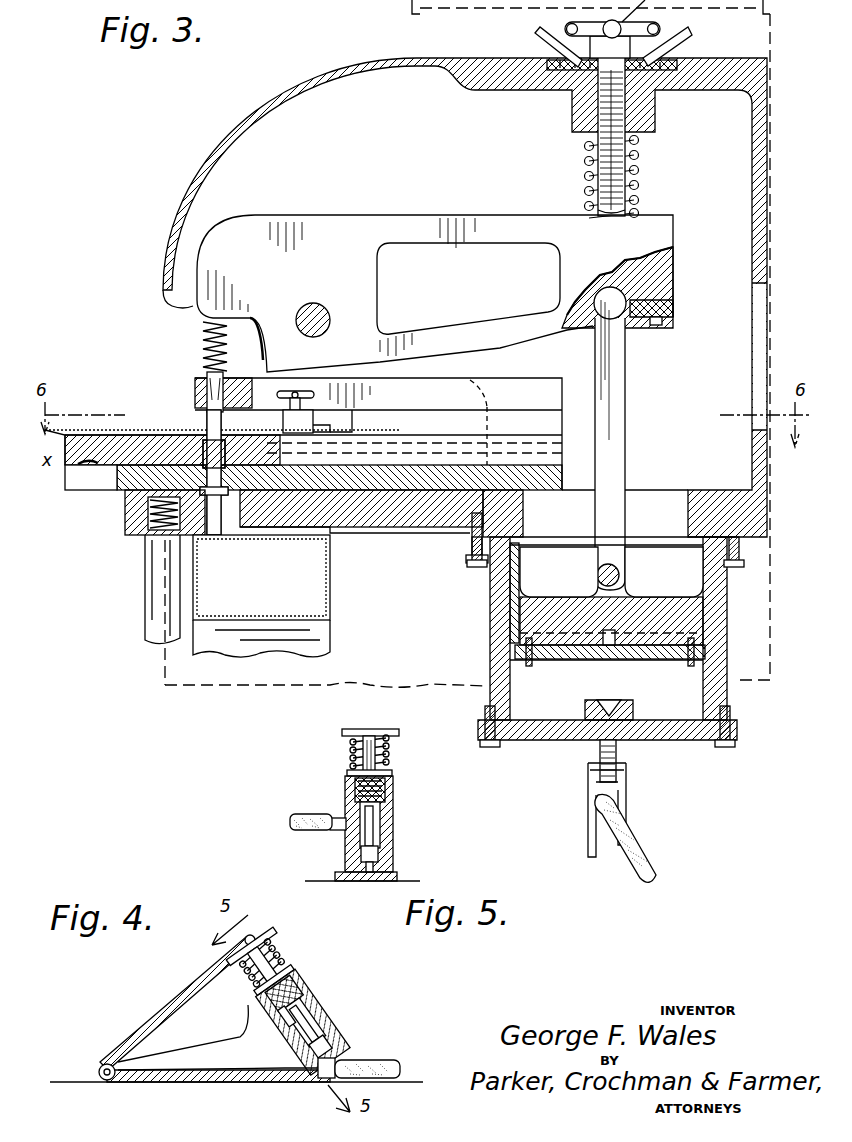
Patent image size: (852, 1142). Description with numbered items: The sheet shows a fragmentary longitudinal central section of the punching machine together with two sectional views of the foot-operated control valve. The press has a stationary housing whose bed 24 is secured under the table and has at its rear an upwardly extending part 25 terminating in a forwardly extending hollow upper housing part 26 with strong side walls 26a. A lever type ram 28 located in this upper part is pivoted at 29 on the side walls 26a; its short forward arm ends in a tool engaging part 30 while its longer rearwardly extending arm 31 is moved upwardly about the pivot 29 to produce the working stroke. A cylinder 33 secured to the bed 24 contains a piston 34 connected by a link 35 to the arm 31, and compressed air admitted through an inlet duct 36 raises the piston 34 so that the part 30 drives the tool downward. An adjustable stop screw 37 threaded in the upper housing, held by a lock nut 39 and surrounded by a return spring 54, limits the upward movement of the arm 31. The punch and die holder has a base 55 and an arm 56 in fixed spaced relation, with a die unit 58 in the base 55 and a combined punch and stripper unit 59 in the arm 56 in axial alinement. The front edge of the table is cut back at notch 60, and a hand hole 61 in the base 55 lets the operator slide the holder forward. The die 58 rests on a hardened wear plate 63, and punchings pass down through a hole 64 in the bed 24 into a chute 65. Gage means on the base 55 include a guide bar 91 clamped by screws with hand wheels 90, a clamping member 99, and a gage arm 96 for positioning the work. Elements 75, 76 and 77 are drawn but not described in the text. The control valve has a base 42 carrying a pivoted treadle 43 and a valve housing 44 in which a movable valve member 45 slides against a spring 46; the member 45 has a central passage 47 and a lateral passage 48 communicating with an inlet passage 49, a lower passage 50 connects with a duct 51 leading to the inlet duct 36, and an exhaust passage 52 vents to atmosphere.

In FIG. 3, the bed 24 is at (130, 537).
In FIG. 3, the upwardly extending part 25 is at (664, 386).
In FIG. 3, the upper housing part 26 is at (250, 124).
In FIG. 3, the side walls 26a is at (304, 156).
In FIG. 3, the lever type ram 28 is at (420, 216).
In FIG. 3, the pivot 29 is at (330, 288).
In FIG. 3, the tool engaging part 30 is at (218, 315).
In FIG. 3, the longer rearwardly extending arm 31 is at (617, 281).
In FIG. 3, the cylinder 33 is at (492, 613).
In FIG. 3, the piston 34 is at (585, 600).
In FIG. 3, the link 35 is at (628, 447).
In FIG. 3, the inlet duct 36 is at (620, 757).
In FIG. 3, the adjustable stop screw 37 is at (640, 163).
In FIG. 3, the lock nut 39 is at (690, 40).
In FIG. 4, the base 42 is at (185, 1084).
In FIG. 5, the treadle 43 is at (385, 723).
In FIG. 4, the treadle 43 is at (178, 993).
In FIG. 5, the valve housing 44 is at (395, 793).
In FIG. 5, the movable valve member 45 is at (393, 815).
In FIG. 4, the movable valve member 45 is at (246, 1044).
In FIG. 5, the spring 46 is at (395, 749).
In FIG. 5, the central passage 47 is at (395, 832).
In FIG. 5, the lateral passage 48 is at (346, 808).
In FIG. 5, the inlet passage 49 is at (356, 836).
In FIG. 5, the passage 50 is at (368, 878).
In FIG. 4, the passage 50 is at (335, 1062).
In FIG. 3, the duct 51 is at (638, 832).
In FIG. 4, the duct 51 is at (390, 1062).
In FIG. 5, the exhaust passage 52 is at (393, 851).
In FIG. 3, the return spring 54 is at (641, 204).
In FIG. 3, the base 55 is at (125, 445).
In FIG. 3, the arm 56 is at (378, 434).
In FIG. 3, the die unit 58 is at (185, 445).
In FIG. 3, the combined punch and stripper unit 59 is at (200, 353).
In FIG. 3, the notch 60 is at (100, 482).
In FIG. 3, the hand hole 61 is at (88, 468).
In FIG. 3, the wear plate 63 is at (282, 468).
In FIG. 3, the hole 64 is at (216, 532).
In FIG. 3, the chute 65 is at (274, 618).
In FIG. 3, the base plate 75 is at (407, 490).
In FIG. 3, the pipe 76 is at (147, 615).
In FIG. 3, the phantom outline 77 is at (772, 645).
In FIG. 3, the hand wheel 90 is at (306, 392).
In FIG. 3, the guide bar 91 is at (350, 433).
In FIG. 3, the arm 96 is at (185, 425).
In FIG. 3, the clamping member 99 is at (316, 422).